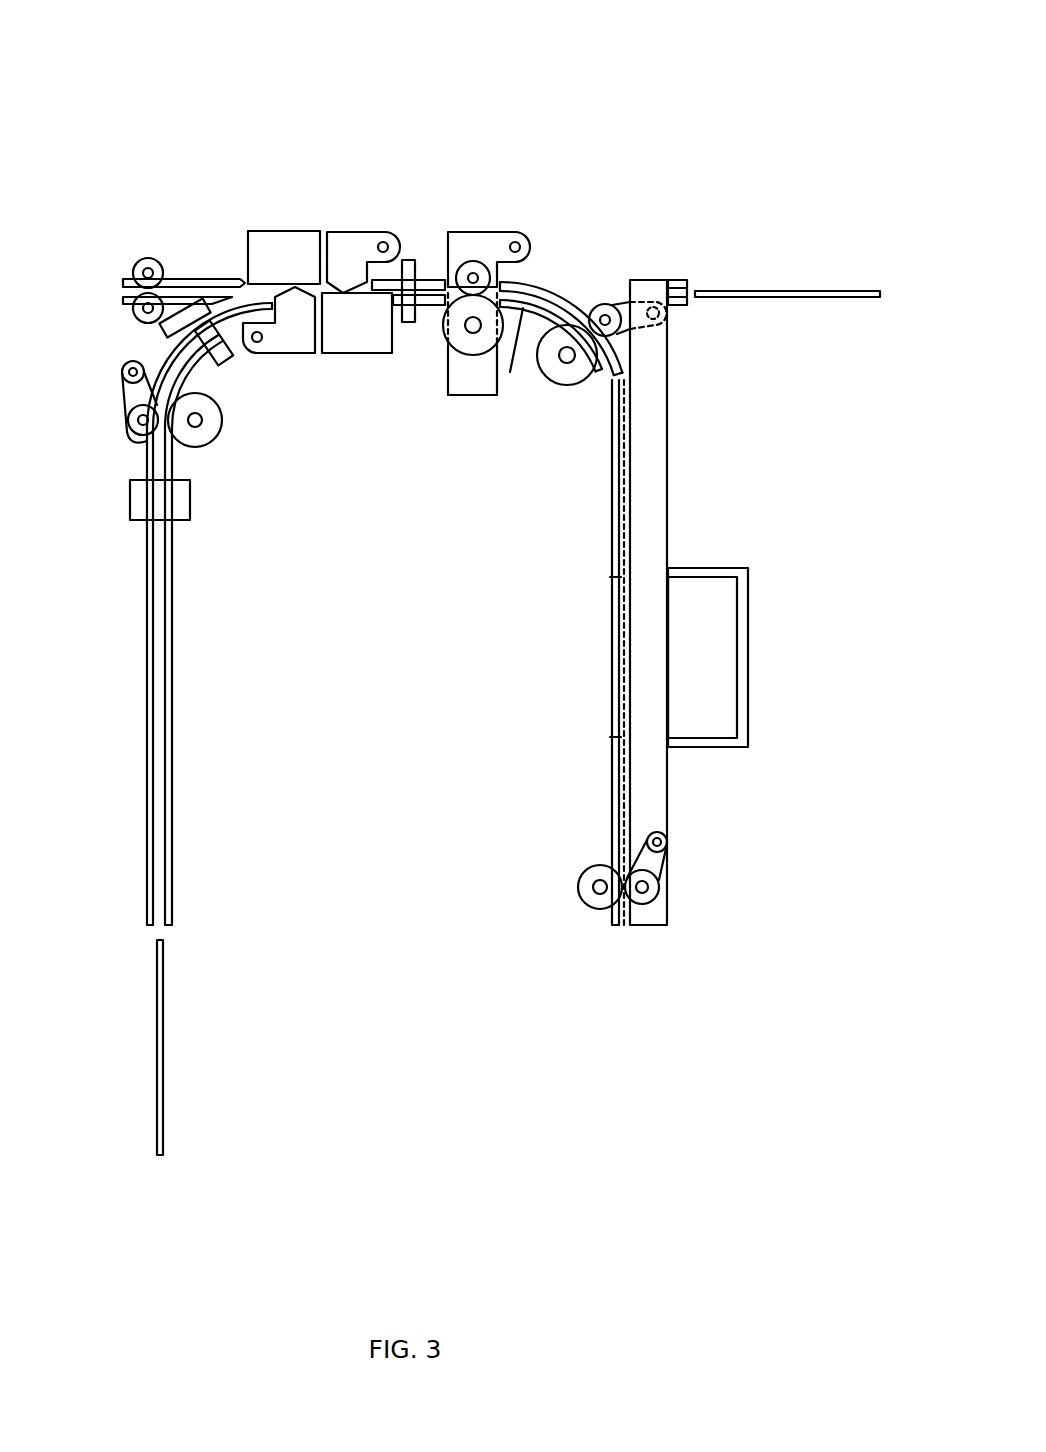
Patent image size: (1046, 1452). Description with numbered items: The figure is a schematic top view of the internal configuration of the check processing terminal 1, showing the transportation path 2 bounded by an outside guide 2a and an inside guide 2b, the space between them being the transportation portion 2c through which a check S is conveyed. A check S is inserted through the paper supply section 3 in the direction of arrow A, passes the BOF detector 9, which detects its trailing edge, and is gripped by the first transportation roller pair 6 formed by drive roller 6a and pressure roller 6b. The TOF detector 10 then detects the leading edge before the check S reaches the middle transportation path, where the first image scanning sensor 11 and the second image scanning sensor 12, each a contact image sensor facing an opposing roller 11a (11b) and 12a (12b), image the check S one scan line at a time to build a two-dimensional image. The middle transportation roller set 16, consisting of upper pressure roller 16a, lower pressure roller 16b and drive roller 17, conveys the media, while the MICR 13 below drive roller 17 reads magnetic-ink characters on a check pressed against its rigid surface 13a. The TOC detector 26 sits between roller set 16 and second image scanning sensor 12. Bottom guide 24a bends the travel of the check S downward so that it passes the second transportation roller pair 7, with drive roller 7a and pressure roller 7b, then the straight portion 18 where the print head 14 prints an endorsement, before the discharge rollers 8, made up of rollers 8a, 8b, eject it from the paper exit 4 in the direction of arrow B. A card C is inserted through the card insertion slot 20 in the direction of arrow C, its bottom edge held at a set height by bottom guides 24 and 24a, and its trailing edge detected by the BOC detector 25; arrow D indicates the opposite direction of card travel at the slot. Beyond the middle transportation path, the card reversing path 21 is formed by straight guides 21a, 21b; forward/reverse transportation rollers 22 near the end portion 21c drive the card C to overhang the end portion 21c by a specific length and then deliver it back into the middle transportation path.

The check processing terminal 1 is at (548, 114).
The transportation path 2 is at (714, 602).
The outside guide 2a is at (652, 440).
The inside guide 2b is at (613, 400).
The transportation portion 2c is at (625, 422).
The paper supply section 3 is at (180, 690).
The paper exit 4 is at (638, 937).
The first transportation roller pair 6 is at (236, 439).
The drive roller 6a is at (215, 423).
The pressure roller 6b is at (167, 442).
The second transportation roller pair 7 is at (572, 398).
The drive roller 7a is at (557, 374).
The pressure roller 7b is at (602, 352).
The discharge rollers 8 is at (658, 899).
The discharge roller 8a is at (612, 918).
The discharge roller 8b is at (667, 858).
The BOF detector 9 is at (190, 510).
The TOF detector 10 is at (217, 351).
The first image scanning sensor 11 is at (291, 240).
The roller 11a is at (288, 366).
The roller 11b is at (292, 350).
The second image scanning sensor 12 is at (382, 355).
The roller 12a is at (352, 204).
The roller 12b is at (352, 242).
The MICR 13 is at (462, 395).
The rigid surface 13a is at (510, 372).
The print head 14 is at (718, 588).
The middle transportation roller set 16 is at (464, 194).
The upper pressure roller 16a is at (440, 218).
The lower pressure roller 16b is at (440, 218).
The drive roller 17 is at (497, 250).
The straight portion 18 is at (607, 577).
The card insertion slot 20 is at (604, 298).
The card reversing path 21 is at (193, 300).
The straight guide 21a is at (225, 279).
The straight guide 21b is at (171, 297).
The end portion 21c is at (125, 283).
The forward/reverse transportation rollers 22 is at (120, 318).
The bottom guide 24 is at (647, 280).
The bottom guide 24a is at (540, 288).
The BOC detector 25 is at (680, 280).
The TOC detector 26 is at (407, 262).
The check S is at (164, 1045).
The card C is at (810, 291).
The arrow A is at (197, 942).
The arrow B is at (623, 933).
The arrow D is at (715, 345).